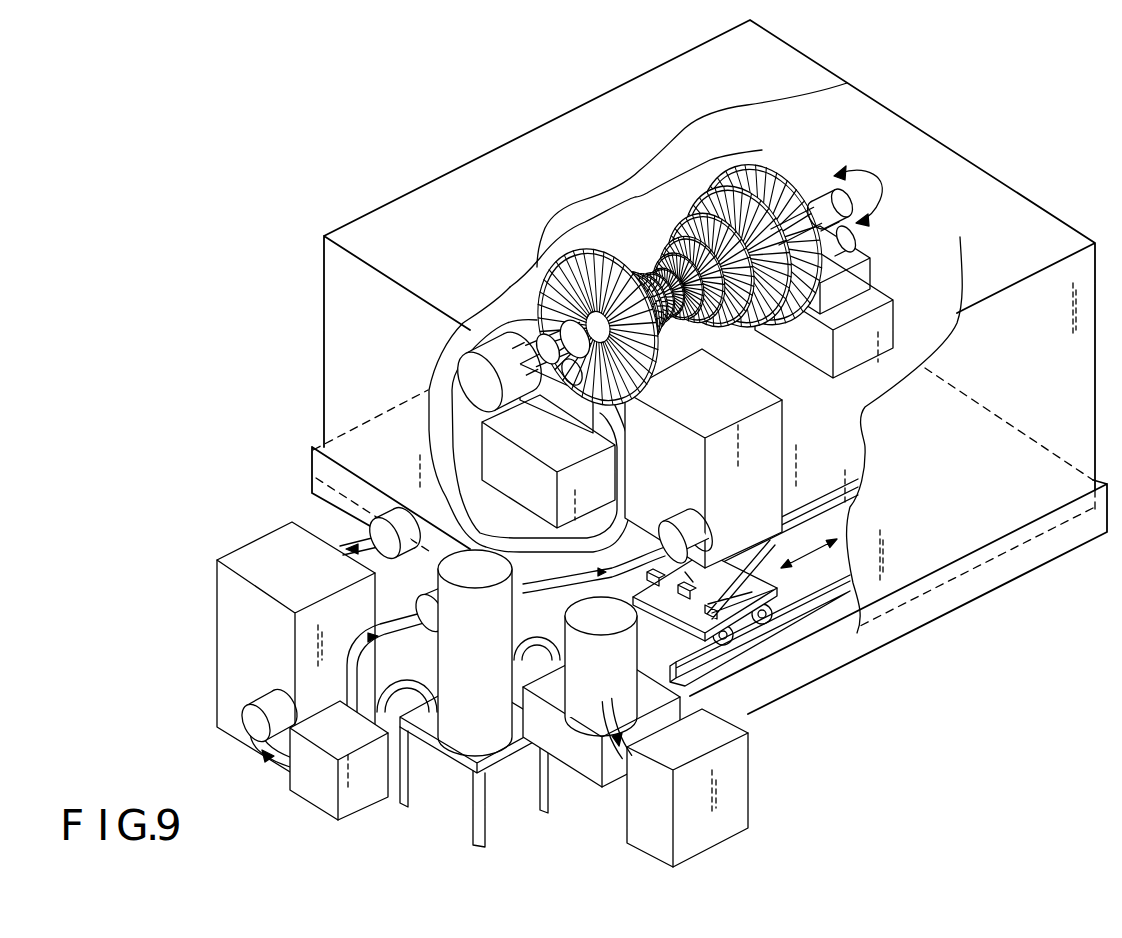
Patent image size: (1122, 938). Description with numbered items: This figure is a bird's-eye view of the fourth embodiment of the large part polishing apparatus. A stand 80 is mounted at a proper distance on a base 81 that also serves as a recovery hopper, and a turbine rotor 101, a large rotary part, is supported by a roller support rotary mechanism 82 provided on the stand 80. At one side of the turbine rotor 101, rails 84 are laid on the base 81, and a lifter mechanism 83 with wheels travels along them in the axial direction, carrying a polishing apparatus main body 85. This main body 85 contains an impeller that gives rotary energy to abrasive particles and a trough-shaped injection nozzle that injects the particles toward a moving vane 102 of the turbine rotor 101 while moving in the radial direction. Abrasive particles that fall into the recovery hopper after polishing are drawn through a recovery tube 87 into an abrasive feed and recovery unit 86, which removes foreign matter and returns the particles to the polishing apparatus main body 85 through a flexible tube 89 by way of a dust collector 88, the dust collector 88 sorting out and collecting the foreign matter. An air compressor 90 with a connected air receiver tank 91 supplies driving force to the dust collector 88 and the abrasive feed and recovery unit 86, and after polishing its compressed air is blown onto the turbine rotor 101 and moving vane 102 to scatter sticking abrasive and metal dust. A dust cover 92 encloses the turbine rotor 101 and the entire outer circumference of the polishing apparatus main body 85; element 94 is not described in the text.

The stand 80 is at (960, 237).
The base 81 is at (900, 626).
The roller support rotary mechanism 82 is at (880, 326).
The lifter mechanism with wheels 83 is at (773, 590).
The rails 84 is at (700, 665).
The polishing apparatus main body 85 is at (767, 440).
The abrasive feed and recovery unit 86 is at (228, 641).
The recovery tube 87 is at (340, 544).
The dust collector 88 is at (451, 718).
The flexible tube 89 is at (597, 682).
The air compressor 90 is at (733, 812).
The air receiver tank 91 is at (592, 735).
The dust cover 92 is at (1035, 232).
The valve 94 is at (243, 723).
The turbine rotor 101 is at (636, 197).
The moving vane 102 is at (500, 283).